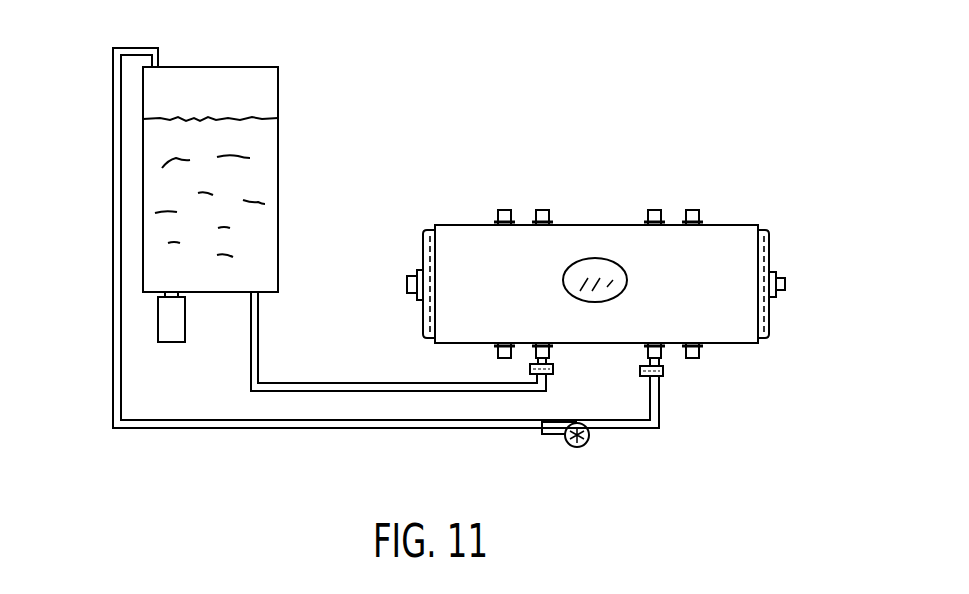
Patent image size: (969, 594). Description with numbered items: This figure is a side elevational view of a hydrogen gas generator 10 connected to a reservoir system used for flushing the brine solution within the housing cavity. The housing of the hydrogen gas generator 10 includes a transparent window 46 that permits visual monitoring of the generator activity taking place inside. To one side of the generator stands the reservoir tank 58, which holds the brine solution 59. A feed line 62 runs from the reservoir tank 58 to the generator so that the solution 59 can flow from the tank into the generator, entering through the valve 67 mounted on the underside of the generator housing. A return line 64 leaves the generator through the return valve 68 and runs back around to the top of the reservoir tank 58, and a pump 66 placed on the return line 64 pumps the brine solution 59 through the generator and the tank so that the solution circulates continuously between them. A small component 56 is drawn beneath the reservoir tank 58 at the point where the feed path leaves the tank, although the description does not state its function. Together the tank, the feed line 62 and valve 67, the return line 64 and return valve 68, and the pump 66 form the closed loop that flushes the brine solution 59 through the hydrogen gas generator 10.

The hydrogen gas generator 10 is at (729, 240).
The transparent window 46 is at (625, 281).
The valve 56 is at (173, 327).
The reservoir tank 58 is at (279, 87).
The solution 59 is at (270, 148).
The feed line 62 is at (325, 386).
The return line 64 is at (397, 428).
The pump 66 is at (586, 445).
The valve 67 is at (553, 370).
The return valve 68 is at (663, 372).